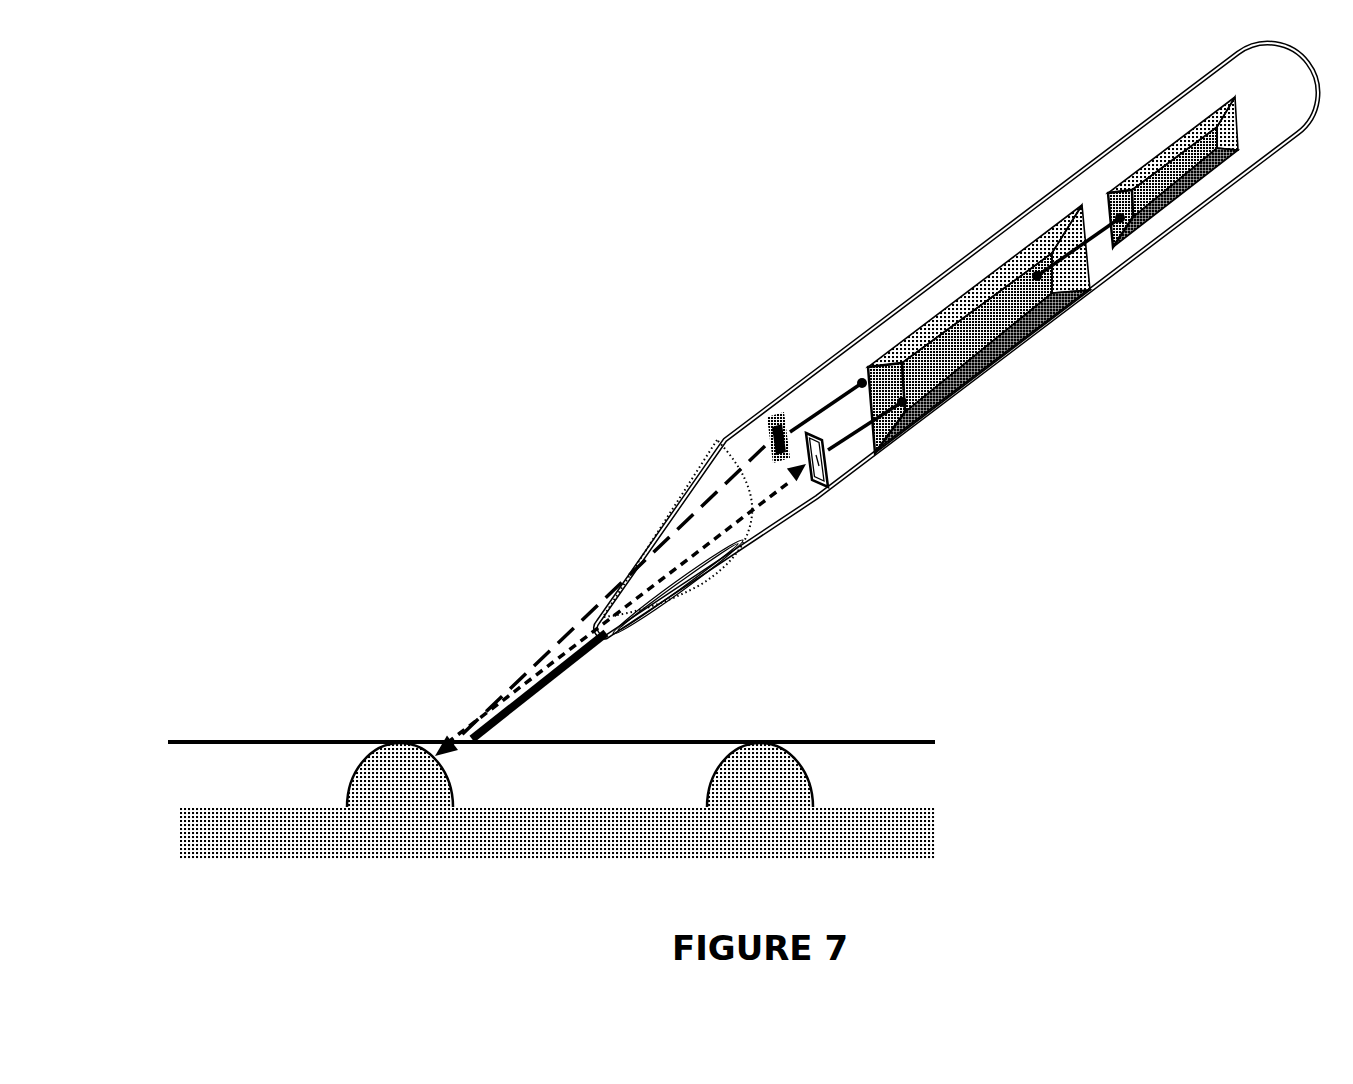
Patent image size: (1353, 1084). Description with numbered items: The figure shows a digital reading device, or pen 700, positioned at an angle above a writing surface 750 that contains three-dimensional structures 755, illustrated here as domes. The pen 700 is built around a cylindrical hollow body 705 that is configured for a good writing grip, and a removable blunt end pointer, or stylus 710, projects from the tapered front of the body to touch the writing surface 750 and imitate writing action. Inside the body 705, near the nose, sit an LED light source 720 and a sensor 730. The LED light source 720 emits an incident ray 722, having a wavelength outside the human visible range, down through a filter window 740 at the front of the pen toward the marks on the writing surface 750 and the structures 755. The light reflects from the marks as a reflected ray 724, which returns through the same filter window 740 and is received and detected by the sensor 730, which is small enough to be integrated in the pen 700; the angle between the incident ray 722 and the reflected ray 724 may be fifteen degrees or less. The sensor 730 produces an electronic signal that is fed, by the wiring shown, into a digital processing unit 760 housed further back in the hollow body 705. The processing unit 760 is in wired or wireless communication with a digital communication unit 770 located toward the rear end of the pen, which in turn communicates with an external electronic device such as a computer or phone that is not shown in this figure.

The digital reading device (pen) 700 is at (628, 162).
The cylindrical hollow body 705 is at (965, 280).
The removable blunt end pointer (stylus) 710 is at (523, 708).
The LED light source 720 is at (768, 432).
The incident ray 722 is at (688, 512).
The reflected ray 724 is at (683, 560).
The sensor 730 is at (827, 467).
The filter window 740 is at (703, 478).
The writing surface 750 is at (234, 742).
The three-dimensional structures (domes) 755 is at (353, 770).
The digital processing unit 760 is at (1013, 310).
The digital communication unit 770 is at (1170, 167).